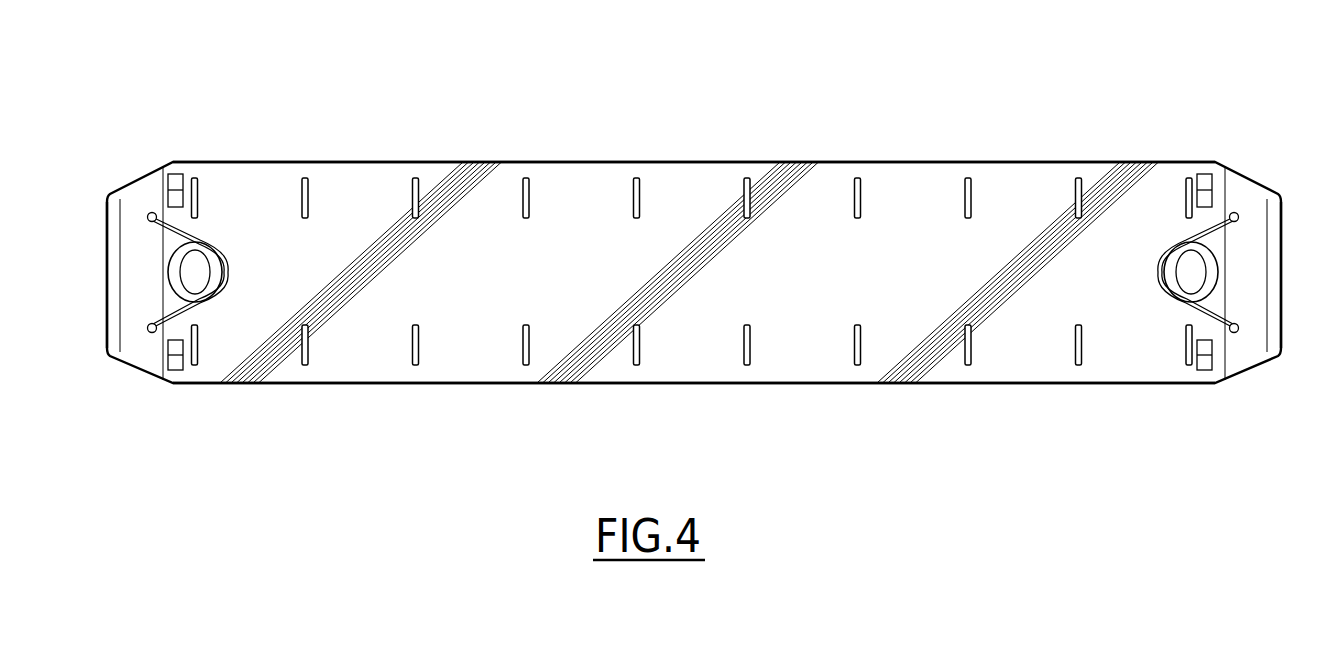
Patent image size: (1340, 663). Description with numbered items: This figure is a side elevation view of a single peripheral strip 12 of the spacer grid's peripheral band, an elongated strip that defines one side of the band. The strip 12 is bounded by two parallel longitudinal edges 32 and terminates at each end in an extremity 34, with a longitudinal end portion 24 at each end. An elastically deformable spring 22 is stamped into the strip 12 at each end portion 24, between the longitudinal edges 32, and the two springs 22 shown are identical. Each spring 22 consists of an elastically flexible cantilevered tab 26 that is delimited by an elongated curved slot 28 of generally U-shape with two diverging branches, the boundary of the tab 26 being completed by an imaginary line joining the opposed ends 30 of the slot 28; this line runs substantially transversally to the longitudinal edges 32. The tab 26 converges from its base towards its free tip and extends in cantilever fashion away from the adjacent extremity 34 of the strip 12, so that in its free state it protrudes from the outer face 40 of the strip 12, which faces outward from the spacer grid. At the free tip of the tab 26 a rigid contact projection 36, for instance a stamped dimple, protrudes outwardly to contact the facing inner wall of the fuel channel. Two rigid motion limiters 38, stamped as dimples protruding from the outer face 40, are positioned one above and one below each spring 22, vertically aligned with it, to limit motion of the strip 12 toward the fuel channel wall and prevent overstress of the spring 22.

The peripheral strip 12 is at (958, 152).
The spring 22 is at (217, 212).
The longitudinal end portion 24 is at (200, 167).
The cantilevered tab 26 is at (190, 314).
The slot 28 is at (220, 244).
The opposed ends of the slot 30 is at (147, 218).
The longitudinal edges 32 is at (715, 161).
The extremity 34 is at (107, 278).
The contact projection 36 is at (197, 272).
The motion limiter 38 is at (172, 187).
The outer face 40 is at (942, 372).